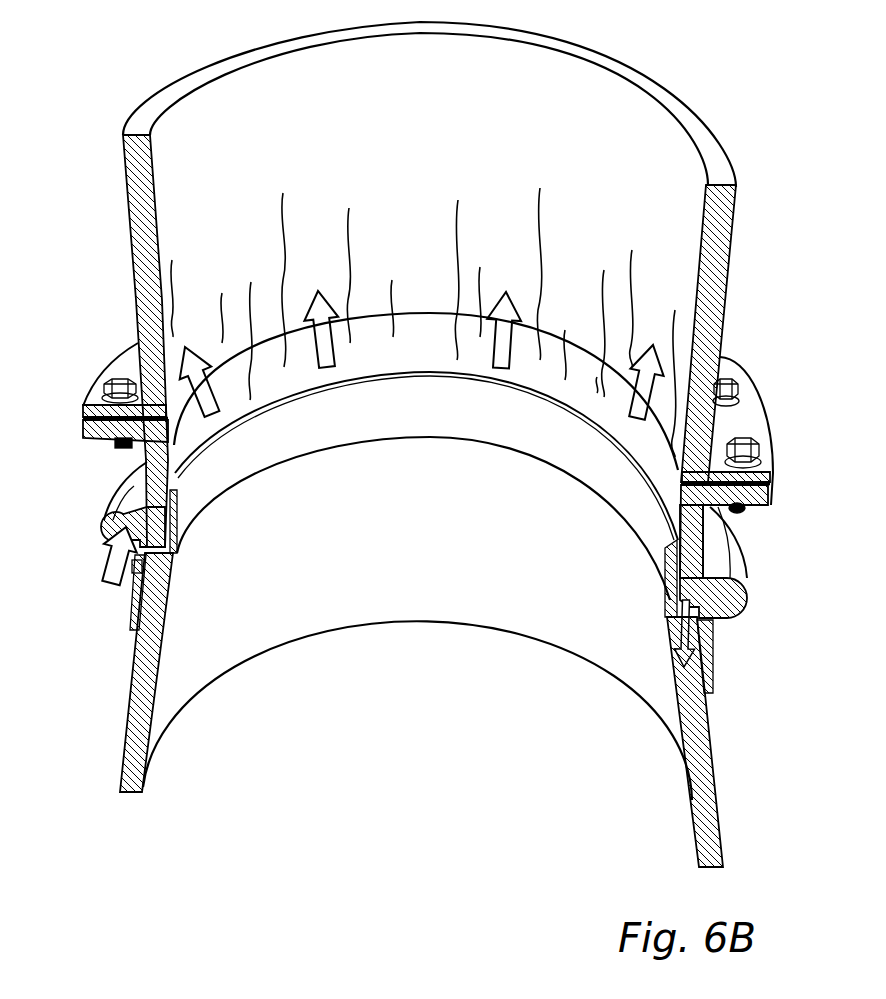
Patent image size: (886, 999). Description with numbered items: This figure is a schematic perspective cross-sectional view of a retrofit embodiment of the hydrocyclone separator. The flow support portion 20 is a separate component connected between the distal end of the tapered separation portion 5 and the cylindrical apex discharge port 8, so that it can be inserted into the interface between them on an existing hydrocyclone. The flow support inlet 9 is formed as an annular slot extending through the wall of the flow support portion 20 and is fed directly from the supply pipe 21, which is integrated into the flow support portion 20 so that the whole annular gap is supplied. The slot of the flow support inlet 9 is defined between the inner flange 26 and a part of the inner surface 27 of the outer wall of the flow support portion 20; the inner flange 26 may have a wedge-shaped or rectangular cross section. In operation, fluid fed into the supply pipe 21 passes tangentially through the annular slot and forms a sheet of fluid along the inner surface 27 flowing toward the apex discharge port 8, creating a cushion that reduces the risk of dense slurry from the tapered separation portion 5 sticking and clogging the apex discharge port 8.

The apex discharge port 8 is at (92, 117).
The flow support portion 20 is at (90, 478).
The flow support inlet 9 is at (106, 380).
The supply pipe 21 is at (112, 552).
The tapered separation portion 5 is at (90, 750).
The inner flange 26 is at (368, 383).
The inner surface of the outer wall 27 is at (415, 347).